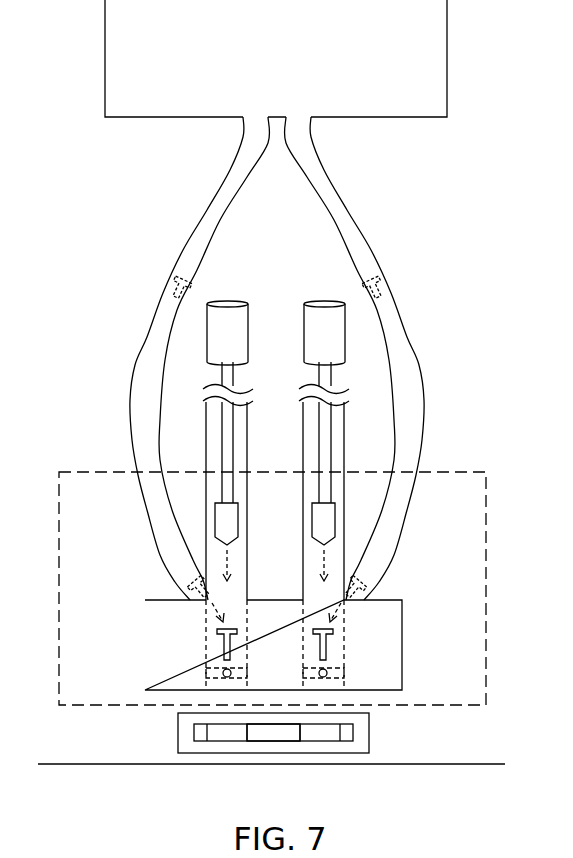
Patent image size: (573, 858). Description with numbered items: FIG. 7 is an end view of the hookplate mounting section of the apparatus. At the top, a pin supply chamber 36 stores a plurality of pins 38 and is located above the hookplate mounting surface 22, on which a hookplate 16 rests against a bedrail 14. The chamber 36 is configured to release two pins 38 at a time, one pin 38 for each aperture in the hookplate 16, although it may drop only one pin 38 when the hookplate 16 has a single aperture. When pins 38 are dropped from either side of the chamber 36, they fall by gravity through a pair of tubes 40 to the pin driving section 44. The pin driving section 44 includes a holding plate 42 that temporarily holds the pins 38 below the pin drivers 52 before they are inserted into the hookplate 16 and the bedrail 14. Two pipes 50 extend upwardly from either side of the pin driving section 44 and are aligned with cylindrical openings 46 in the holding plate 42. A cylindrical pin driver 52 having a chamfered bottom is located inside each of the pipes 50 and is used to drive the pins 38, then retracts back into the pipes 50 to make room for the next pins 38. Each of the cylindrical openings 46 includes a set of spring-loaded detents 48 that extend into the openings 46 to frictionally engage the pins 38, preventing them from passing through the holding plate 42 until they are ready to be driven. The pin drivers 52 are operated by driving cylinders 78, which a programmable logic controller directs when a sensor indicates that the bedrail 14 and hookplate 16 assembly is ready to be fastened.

The pin supply chamber 36 is at (265, 61).
The tubes 40 is at (198, 236).
The driving cylinders 78 is at (306, 312).
The pipes 50 is at (303, 423).
The pin driver 52 is at (312, 515).
The pin driving section 44 is at (478, 470).
The holding plate 42 is at (390, 600).
The pins 38 is at (218, 632).
The cylindrical openings 46 is at (213, 648).
The spring-loaded detents 48 is at (221, 680).
The bedrail 14 is at (364, 732).
The hookplate 16 is at (269, 735).
The hookplate mounting surface 22 is at (471, 764).